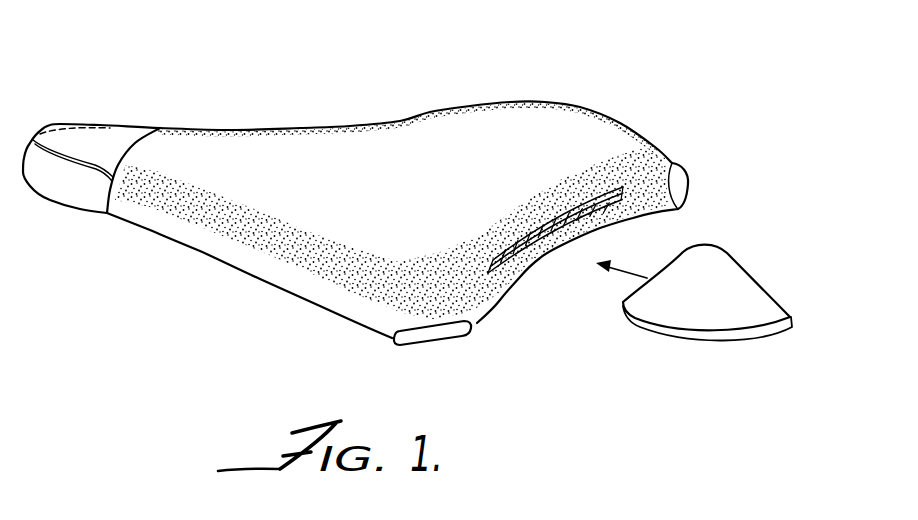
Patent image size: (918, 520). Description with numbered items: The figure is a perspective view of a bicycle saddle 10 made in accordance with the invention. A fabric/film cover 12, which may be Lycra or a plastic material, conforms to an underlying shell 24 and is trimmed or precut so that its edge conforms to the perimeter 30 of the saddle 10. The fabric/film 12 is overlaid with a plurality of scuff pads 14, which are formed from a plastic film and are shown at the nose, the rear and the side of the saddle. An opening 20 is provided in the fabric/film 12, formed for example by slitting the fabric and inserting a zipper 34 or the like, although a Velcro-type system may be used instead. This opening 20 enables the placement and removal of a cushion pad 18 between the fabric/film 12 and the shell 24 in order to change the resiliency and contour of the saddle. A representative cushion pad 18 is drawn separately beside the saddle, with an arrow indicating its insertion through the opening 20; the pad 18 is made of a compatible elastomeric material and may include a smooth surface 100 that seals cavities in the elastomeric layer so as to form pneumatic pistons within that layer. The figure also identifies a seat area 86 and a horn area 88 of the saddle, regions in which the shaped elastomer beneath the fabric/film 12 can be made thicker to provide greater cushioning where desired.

The bicycle saddle 10 is at (391, 215).
The fabric/film cover 12 is at (382, 146).
The scuff pads 14 is at (105, 126).
The cushion pad 18 is at (712, 286).
The opening 20 is at (536, 254).
The shell 24 is at (341, 330).
The perimeter 30 is at (227, 263).
The zipper 34 is at (553, 230).
The seat area 86 is at (518, 113).
The horn area 88 is at (186, 92).
The smooth surface 100 is at (725, 306).